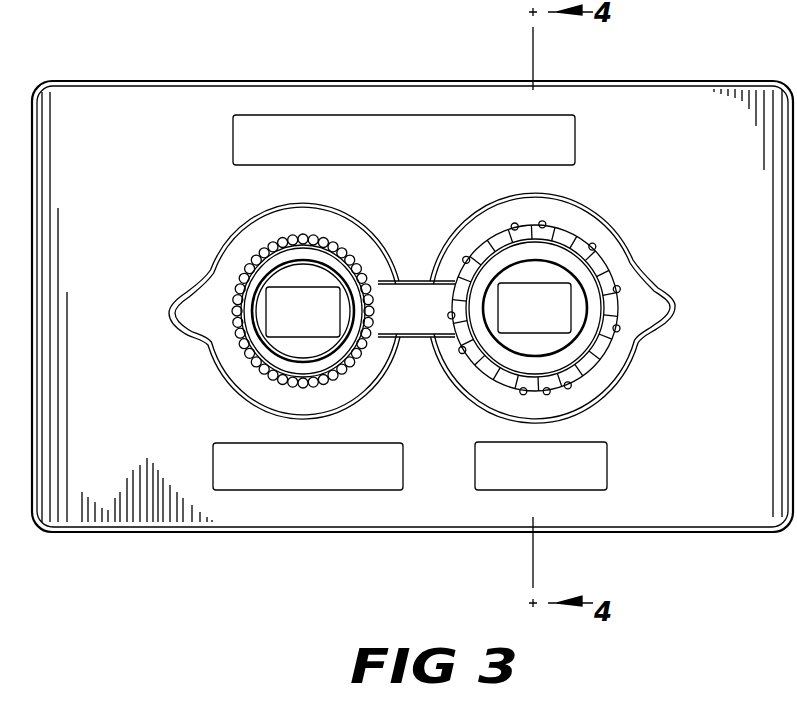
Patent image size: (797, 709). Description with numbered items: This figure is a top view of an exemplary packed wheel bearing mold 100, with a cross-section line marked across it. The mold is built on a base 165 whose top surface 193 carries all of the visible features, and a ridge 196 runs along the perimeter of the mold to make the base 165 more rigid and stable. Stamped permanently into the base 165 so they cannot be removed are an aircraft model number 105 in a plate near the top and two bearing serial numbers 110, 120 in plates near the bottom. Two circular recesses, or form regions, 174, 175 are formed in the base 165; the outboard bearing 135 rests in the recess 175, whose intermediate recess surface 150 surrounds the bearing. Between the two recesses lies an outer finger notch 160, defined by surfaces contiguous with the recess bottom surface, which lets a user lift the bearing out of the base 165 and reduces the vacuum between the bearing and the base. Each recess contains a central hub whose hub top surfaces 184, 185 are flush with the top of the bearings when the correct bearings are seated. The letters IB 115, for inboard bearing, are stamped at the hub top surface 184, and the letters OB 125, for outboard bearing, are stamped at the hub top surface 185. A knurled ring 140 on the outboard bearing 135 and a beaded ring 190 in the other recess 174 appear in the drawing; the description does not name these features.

The packed wheel bearing mold 100 is at (162, 60).
The aircraft model number 105 is at (427, 116).
The bearing serial number 110 is at (285, 480).
The "IB" marking 115 is at (283, 320).
The bearing serial number 120 is at (548, 480).
The "OB" marking 125 is at (523, 320).
The outboard bearing 135 is at (575, 275).
The knurled rotating ring 140 is at (603, 362).
The intermediate recess surface 150 is at (550, 309).
The outer finger notch 160 is at (438, 310).
The base 165 is at (331, 80).
The recess 174 is at (230, 396).
The recess 175 is at (619, 394).
The hub top surface 184 is at (287, 277).
The hub top surface 185 is at (552, 278).
The beaded rotating ring 190 is at (250, 270).
The top surface 193 is at (705, 134).
The ridge 196 is at (712, 80).